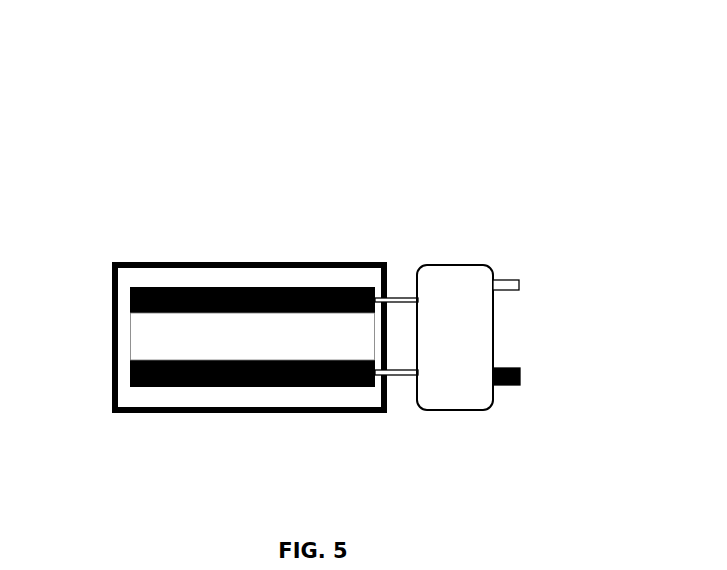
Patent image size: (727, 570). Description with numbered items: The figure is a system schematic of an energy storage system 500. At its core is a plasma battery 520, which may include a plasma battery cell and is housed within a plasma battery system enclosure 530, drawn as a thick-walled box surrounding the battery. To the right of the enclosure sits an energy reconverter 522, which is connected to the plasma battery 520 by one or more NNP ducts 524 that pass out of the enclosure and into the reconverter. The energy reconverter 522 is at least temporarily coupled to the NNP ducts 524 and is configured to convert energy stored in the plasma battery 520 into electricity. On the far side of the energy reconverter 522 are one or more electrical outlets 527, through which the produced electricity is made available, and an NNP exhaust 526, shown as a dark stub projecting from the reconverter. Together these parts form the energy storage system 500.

The energy storage system 500 is at (263, 92).
The plasma battery 520 is at (116, 329).
The energy reconverter 522 is at (455, 337).
The NNP ducts 524 is at (410, 298).
The NNP exhaust 526 is at (520, 378).
The electrical outlets 527 is at (517, 276).
The plasma battery system enclosure 530 is at (242, 263).